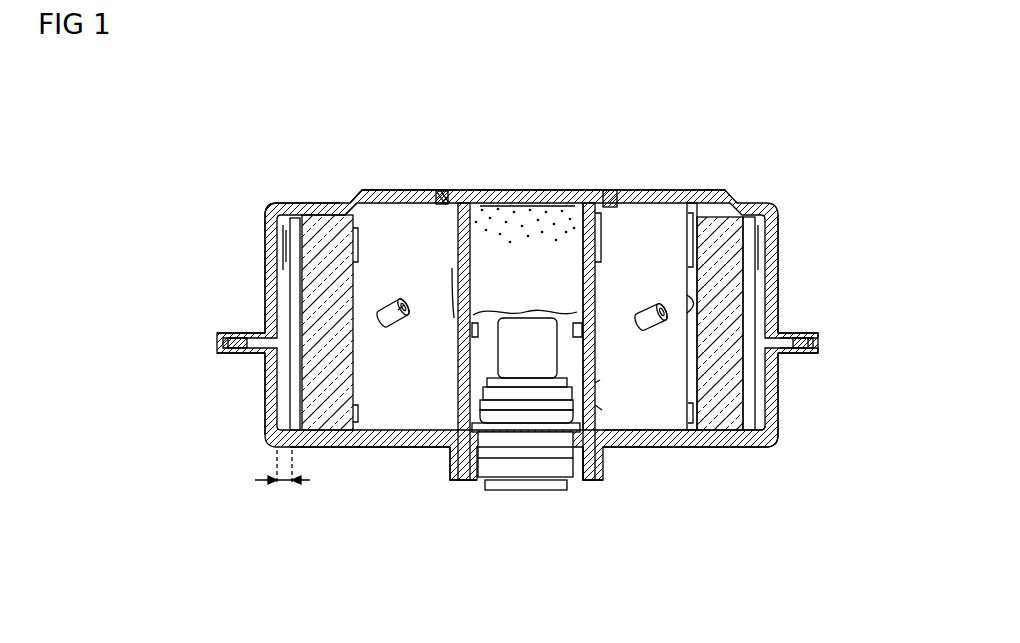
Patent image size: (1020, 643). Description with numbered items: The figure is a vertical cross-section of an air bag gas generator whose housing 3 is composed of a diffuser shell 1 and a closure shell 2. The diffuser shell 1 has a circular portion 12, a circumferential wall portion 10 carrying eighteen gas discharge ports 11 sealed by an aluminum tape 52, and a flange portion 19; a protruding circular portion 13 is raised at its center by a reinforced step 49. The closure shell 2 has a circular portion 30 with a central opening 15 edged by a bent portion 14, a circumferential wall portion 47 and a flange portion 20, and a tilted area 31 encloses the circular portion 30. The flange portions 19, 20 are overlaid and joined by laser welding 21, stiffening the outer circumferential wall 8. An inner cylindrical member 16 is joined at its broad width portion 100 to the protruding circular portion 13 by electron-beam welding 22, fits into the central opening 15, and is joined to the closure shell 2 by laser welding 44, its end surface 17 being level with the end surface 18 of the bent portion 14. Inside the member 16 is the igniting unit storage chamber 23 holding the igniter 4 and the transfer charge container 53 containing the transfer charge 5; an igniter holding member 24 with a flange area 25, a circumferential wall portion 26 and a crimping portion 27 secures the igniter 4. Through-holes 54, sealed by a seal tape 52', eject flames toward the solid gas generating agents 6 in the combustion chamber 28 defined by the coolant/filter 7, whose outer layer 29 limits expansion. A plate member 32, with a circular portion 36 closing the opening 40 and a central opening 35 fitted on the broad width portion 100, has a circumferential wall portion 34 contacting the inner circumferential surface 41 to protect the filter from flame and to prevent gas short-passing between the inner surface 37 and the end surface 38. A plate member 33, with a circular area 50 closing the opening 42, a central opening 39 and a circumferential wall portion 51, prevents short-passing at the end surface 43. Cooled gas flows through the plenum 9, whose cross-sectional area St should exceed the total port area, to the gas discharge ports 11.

The diffuser shell 1 is at (661, 182).
The closure shell 2 is at (338, 449).
The housing 3 is at (612, 188).
The igniter 4 is at (467, 300).
The transfer charge 5 is at (537, 192).
The solid gas generating agents 6 is at (392, 303).
The coolant/filter 7 is at (673, 447).
The outer circumferential wall 8 is at (780, 283).
The plenum 9 is at (763, 207).
The circumferential wall portion 10 is at (265, 313).
The gas discharge ports 11 is at (265, 245).
The circular portion 12 is at (740, 205).
The protruding circular portion 13 is at (518, 240).
The bent portion 14 is at (605, 470).
The central opening 15 is at (480, 478).
The inner cylindrical member 16 is at (645, 202).
The end surface 17 is at (465, 482).
The end surface 18 is at (447, 478).
The flange portion 19 is at (815, 333).
The flange portion 20 is at (805, 351).
The laser welding 21 is at (816, 340).
The electron-beam welding 22 is at (610, 178).
The igniting unit storage chamber 23 is at (515, 192).
The igniter holding member 24 is at (602, 408).
The flange area 25 is at (596, 384).
The circumferential wall portion 26 is at (550, 468).
The crimping portion 27 is at (575, 480).
The combustion chamber 28 is at (678, 198).
The outer layer 29 is at (780, 413).
The circular portion 30 is at (705, 447).
The tilted area 31 is at (763, 447).
The plate member 32 is at (418, 198).
The plate member 33 is at (636, 448).
The circumferential wall portion 34 is at (367, 197).
The central opening 35 is at (601, 290).
The circular portion 36 is at (390, 203).
The inner surface 37 is at (275, 204).
The end surface 38 is at (323, 205).
The central opening 39 is at (422, 448).
The opening 40 is at (698, 205).
The inner circumferential surface 41 is at (760, 312).
The opening 42 is at (664, 443).
The end surface 43 is at (728, 447).
The laser welding 44 is at (593, 476).
The circumferential wall portion 47 is at (263, 403).
The reinforced step 49 is at (353, 203).
The circular area 50 is at (360, 448).
The circumferential wall portion 51 is at (357, 418).
The aluminum tape 52 is at (223, 309).
The seal tape 52' is at (423, 294).
The transfer charge container 53 is at (387, 448).
The through-holes 54 is at (453, 270).
The broad width portion 100 is at (456, 220).
The area of the gas channel radial cross-section St is at (283, 485).